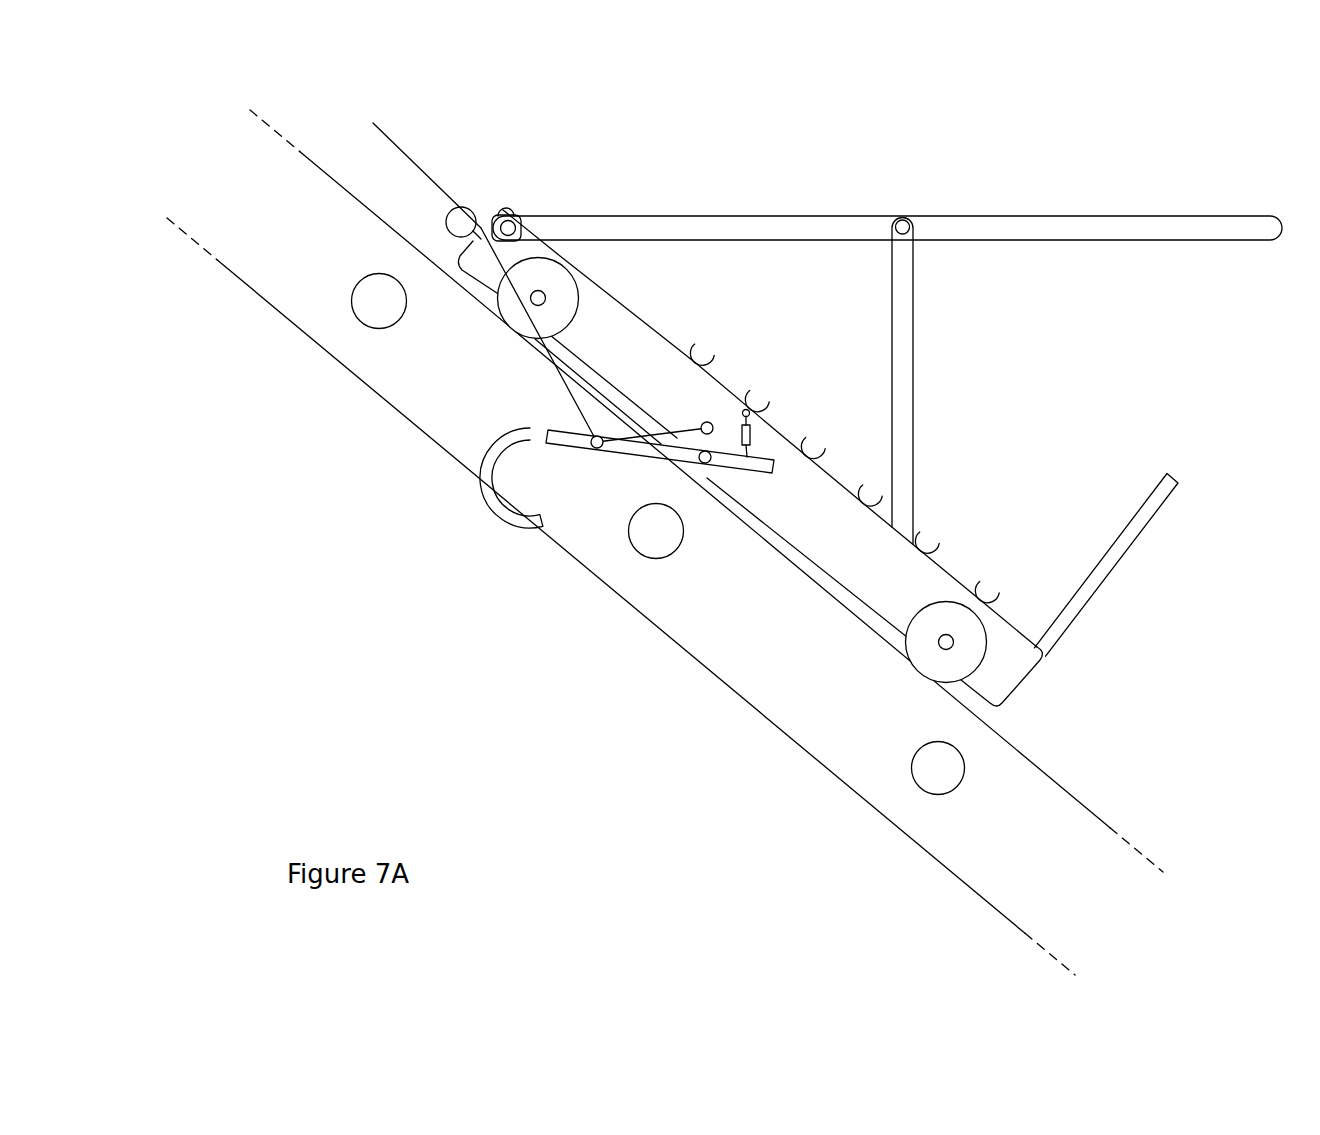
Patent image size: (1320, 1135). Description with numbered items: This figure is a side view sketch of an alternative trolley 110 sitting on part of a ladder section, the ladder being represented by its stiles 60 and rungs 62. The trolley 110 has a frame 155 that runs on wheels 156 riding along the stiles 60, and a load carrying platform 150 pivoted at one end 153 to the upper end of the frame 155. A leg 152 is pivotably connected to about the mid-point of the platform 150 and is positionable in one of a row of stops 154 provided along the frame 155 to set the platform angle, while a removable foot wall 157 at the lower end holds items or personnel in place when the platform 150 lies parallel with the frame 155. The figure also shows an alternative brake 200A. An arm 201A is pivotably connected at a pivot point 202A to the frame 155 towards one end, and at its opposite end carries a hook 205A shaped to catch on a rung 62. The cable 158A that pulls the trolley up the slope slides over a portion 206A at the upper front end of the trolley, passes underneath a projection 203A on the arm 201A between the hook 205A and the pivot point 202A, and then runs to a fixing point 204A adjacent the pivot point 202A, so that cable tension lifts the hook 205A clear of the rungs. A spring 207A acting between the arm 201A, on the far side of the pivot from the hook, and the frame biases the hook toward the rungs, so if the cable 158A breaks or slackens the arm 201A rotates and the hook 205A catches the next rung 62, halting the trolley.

The trolley 110 is at (1250, 119).
The stiles 60 is at (786, 653).
The rung 62 is at (372, 308).
The load carrying platform 150 is at (1068, 228).
The leg 152 is at (905, 305).
The pivoted end 153 is at (514, 222).
The stops 154 is at (996, 582).
The frame 155 is at (911, 592).
The wheels 156 is at (513, 318).
The removable foot wall 157 is at (1123, 540).
The cable 158A is at (402, 150).
The brake 200A is at (521, 559).
The arm 201A is at (752, 466).
The pivot point 202A is at (703, 464).
The projection 203A is at (592, 448).
The fixing point 204A is at (702, 424).
The hook 205A is at (494, 465).
The portion 206A is at (446, 223).
The spring 207A is at (752, 440).